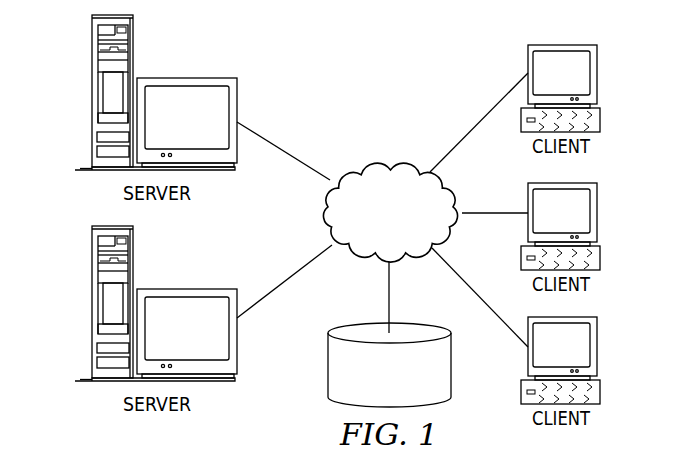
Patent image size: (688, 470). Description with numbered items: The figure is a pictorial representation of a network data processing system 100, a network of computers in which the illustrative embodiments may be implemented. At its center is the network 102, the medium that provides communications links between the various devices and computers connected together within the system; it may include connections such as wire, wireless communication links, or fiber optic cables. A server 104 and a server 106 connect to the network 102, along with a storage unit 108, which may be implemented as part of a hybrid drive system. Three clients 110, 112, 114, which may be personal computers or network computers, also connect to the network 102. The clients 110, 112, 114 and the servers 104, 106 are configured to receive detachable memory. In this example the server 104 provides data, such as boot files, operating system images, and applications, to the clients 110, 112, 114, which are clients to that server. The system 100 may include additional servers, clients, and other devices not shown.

The network data processing system 100 is at (441, 51).
The network 102 is at (363, 163).
The server 104 is at (93, 93).
The server 106 is at (93, 305).
The storage unit 108 is at (328, 372).
The client 110 is at (597, 74).
The client 112 is at (597, 213).
The client 114 is at (597, 347).